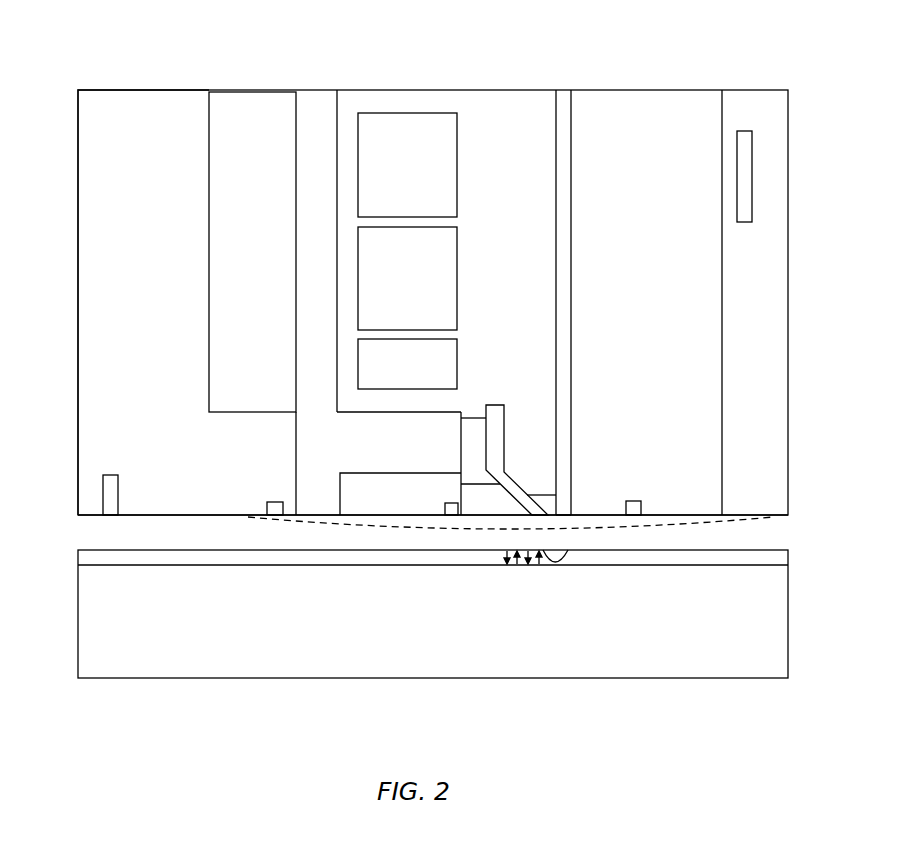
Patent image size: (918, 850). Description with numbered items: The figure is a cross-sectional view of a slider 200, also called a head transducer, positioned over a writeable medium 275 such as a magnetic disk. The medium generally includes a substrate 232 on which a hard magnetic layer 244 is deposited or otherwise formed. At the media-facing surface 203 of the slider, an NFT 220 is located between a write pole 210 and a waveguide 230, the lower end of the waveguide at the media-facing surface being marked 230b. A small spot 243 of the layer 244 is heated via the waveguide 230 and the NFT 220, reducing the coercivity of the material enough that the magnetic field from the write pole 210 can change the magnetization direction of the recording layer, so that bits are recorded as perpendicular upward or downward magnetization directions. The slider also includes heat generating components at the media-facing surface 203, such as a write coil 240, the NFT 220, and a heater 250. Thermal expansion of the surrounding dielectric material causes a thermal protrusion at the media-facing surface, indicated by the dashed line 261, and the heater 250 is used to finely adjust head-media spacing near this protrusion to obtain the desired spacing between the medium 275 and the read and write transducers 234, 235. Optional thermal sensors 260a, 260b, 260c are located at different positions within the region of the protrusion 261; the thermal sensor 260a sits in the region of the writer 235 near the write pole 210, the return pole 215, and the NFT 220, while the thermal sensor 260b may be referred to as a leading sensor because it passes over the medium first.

The slider 200 is at (113, 90).
The media-facing surface 203 is at (95, 517).
The write pole 210 is at (488, 405).
The return pole 215 is at (299, 428).
The NFT 220 is at (543, 496).
The waveguide 230 is at (572, 430).
The wall bottom end 230b is at (572, 505).
The substrate 232 is at (447, 639).
The read transducer 234 is at (119, 492).
The writer 235 is at (180, 200).
The write coil 240 is at (447, 283).
The spot 243 is at (565, 563).
The hard magnetic layer 244 is at (788, 551).
The heater 250 is at (745, 222).
The thermal sensor 260a is at (450, 502).
The thermal sensor 260b is at (636, 500).
The thermal sensor 260c is at (272, 502).
The thermal protrusion 261 is at (698, 527).
The writeable medium 275 is at (220, 698).